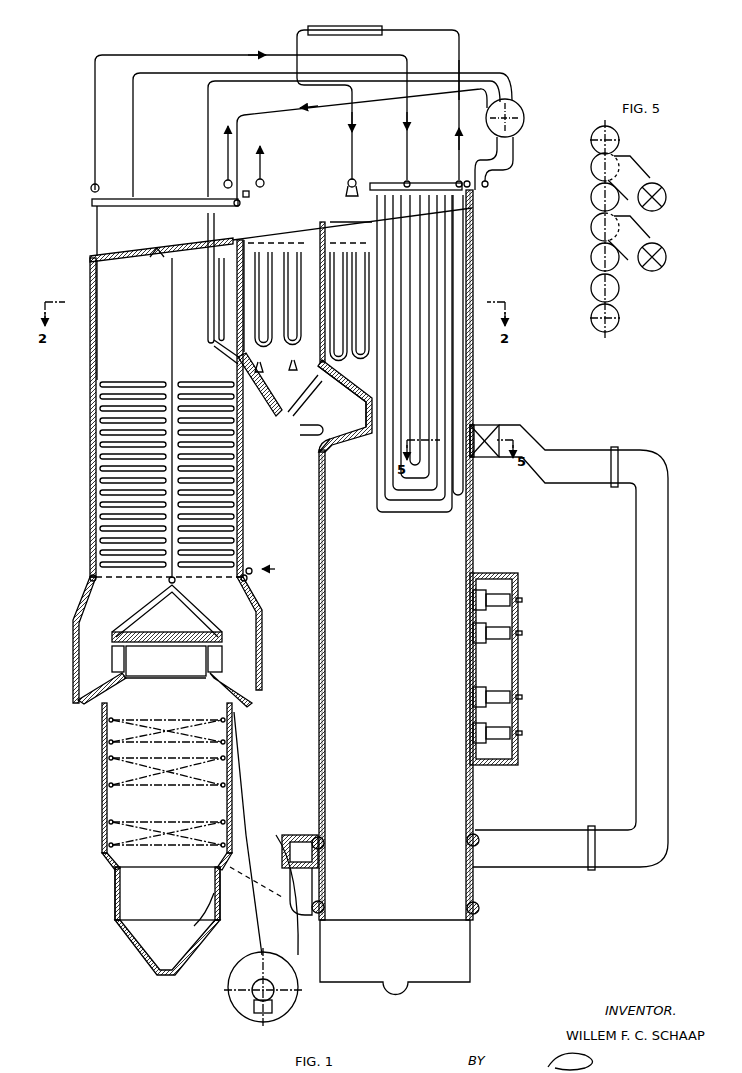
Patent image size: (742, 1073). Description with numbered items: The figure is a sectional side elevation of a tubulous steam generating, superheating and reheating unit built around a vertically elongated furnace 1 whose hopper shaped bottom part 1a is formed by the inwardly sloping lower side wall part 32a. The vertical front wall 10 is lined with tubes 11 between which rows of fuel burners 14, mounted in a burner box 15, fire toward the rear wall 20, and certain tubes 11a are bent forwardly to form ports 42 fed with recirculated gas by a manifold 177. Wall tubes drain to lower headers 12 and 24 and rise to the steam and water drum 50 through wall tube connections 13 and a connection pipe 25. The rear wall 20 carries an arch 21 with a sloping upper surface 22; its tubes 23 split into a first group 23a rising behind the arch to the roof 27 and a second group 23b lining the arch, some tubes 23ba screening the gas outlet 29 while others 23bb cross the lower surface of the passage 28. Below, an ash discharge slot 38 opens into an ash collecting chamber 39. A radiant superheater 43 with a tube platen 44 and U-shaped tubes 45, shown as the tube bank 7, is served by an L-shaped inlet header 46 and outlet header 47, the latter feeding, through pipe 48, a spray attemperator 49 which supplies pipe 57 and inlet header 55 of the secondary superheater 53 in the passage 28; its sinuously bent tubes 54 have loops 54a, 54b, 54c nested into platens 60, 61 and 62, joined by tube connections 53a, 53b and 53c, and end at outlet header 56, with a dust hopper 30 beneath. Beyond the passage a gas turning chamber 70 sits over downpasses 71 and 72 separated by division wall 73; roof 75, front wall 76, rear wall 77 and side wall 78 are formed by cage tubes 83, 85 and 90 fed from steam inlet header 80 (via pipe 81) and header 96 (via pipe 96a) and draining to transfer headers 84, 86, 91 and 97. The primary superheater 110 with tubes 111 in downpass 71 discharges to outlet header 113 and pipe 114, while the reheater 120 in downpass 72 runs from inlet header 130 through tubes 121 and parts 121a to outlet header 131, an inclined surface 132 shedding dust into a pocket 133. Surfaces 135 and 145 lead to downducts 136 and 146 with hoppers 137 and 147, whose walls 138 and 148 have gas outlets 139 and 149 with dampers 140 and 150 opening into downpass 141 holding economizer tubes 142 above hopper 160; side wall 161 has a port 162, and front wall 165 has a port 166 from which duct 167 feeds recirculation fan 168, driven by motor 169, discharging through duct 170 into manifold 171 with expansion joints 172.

In FIG. 1, the furnace 1 is at (401, 665).
In FIG. 1, the hopper shaped bottom part 1a is at (370, 806).
In FIG. 1, the tube bank 7 is at (414, 353).
In FIG. 1, the front wall 10 is at (474, 530).
In FIG. 5, the front wall 10 is at (591, 198).
In FIG. 1, the tubes 11 is at (474, 223).
In FIG. 5, the tubes 11 is at (620, 312).
In FIG. 1, the bent tubes 11a is at (482, 458).
In FIG. 5, the bent tubes 11a is at (668, 196).
In FIG. 1, the lower header 12 is at (478, 845).
In FIG. 1, the upper header connection 13 is at (468, 181).
In FIG. 1, the fuel burners 14 is at (472, 633).
In FIG. 1, the burner box 15 is at (494, 669).
In FIG. 1, the rear wall 20 is at (326, 577).
In FIG. 1, the arch 21 is at (335, 455).
In FIG. 1, the upper surface 22 is at (364, 404).
In FIG. 1, the steam generating tubes 23 is at (326, 656).
In FIG. 1, the first group of tubes 23a is at (300, 432).
In FIG. 1, the second group of tubes 23b is at (333, 443).
In FIG. 1, the screen tubes 23ba is at (370, 396).
In FIG. 1, the arch upper surface tubes 23bb is at (352, 388).
In FIG. 1, the lower header 24 is at (322, 902).
In FIG. 1, the connection pipe 25 is at (489, 184).
In FIG. 1, the roof 27 is at (352, 225).
In FIG. 1, the passage 28 is at (275, 296).
In FIG. 1, the gas outlet 29 is at (345, 292).
In FIG. 1, the dust hopper 30 is at (261, 384).
In FIG. 1, the lower side wall part 32a is at (386, 790).
In FIG. 1, the ash discharge slot 38 is at (390, 920).
In FIG. 1, the ash collecting chamber 39 is at (472, 940).
In FIG. 1, the ports 42 is at (484, 424).
In FIG. 5, the ports 42 is at (591, 167).
In FIG. 1, the radiant superheater 43 is at (460, 262).
In FIG. 1, the tube platen 44 is at (458, 287).
In FIG. 1, the U-shaped tubes 45 is at (456, 366).
In FIG. 1, the inlet header 46 is at (404, 182).
In FIG. 1, the outlet header 47 is at (447, 183).
In FIG. 1, the pipe 48 is at (461, 48).
In FIG. 1, the spray type attemperator 49 is at (368, 28).
In FIG. 1, the steam and water drum 50 is at (524, 120).
In FIG. 1, the secondary superheater 53 is at (364, 268).
In FIG. 1, the tube connection 53a is at (269, 370).
In FIG. 1, the tube connection 53b is at (300, 369).
In FIG. 1, the tube connection 53c is at (305, 395).
In FIG. 1, the sinuously bent tubes 54 is at (364, 248).
In FIG. 1, the U-shaped loop 54a is at (336, 360).
In FIG. 1, the U-shaped loop 54b is at (292, 342).
In FIG. 1, the U-shaped loop 54c is at (258, 338).
In FIG. 1, the inlet header 55 is at (349, 181).
In FIG. 1, the outlet header 56 is at (263, 181).
In FIG. 1, the pipe 57 is at (296, 47).
In FIG. 1, the tube platen 60 is at (336, 336).
In FIG. 1, the tube platen 61 is at (300, 270).
In FIG. 1, the tube platens 62 is at (260, 270).
In FIG. 1, the gas turning chamber 70 is at (158, 248).
In FIG. 1, the downpass 71 is at (133, 474).
In FIG. 1, the downpass 72 is at (260, 496).
In FIG. 1, the division wall 73 is at (170, 490).
In FIG. 1, the roof 75 is at (128, 251).
In FIG. 1, the front wall 76 is at (242, 461).
In FIG. 1, the rear wall 77 is at (90, 467).
In FIG. 1, the side wall 78 is at (100, 405).
In FIG. 1, the steam inlet header 80 is at (238, 199).
In FIG. 1, the pipe 81 is at (283, 112).
In FIG. 1, the tubes 83 is at (134, 261).
In FIG. 1, the first transfer header 84 is at (90, 575).
In FIG. 1, the tubes 85 is at (192, 252).
In FIG. 1, the second transfer header 86 is at (176, 583).
In FIG. 1, the tubes 90 is at (236, 356).
In FIG. 1, the third transfer header 91 is at (248, 580).
In FIG. 1, the steam inlet header 96 is at (168, 199).
In FIG. 1, the pipe 96a is at (206, 128).
In FIG. 1, the fourth transfer header 97 is at (146, 579).
In FIG. 1, the primary superheater 110 is at (100, 421).
In FIG. 1, the tube 111 is at (100, 378).
In FIG. 1, the outlet header 113 is at (92, 185).
In FIG. 1, the pipe 114 is at (136, 56).
In FIG. 1, the steam reheater 120 is at (242, 521).
In FIG. 1, the tube 121 is at (242, 541).
In FIG. 1, the tube part 121a is at (210, 318).
In FIG. 1, the inlet header 130 is at (275, 561).
In FIG. 1, the outlet header 131 is at (224, 183).
In FIG. 1, the inclined surface 132 is at (214, 346).
In FIG. 1, the dust pocket 133 is at (270, 396).
In FIG. 1, the sloping surface 135 is at (148, 613).
In FIG. 1, the downduct 136 is at (95, 611).
In FIG. 1, the hopper 137 is at (84, 703).
In FIG. 1, the forward wall 138 is at (112, 637).
In FIG. 1, the gas outlet 139 is at (112, 665).
In FIG. 1, the adjustable dampers 140 is at (124, 661).
In FIG. 1, the downpass 141 is at (116, 750).
In FIG. 1, the economizer tubes 142 is at (160, 782).
In FIG. 1, the sloping surface 145 is at (250, 598).
In FIG. 1, the downduct 146 is at (290, 657).
In FIG. 1, the hopper 147 is at (250, 706).
In FIG. 1, the rearward wall 148 is at (224, 638).
In FIG. 1, the gas outlet 149 is at (218, 668).
In FIG. 1, the adjustable dampers 150 is at (210, 678).
In FIG. 1, the hopper 160 is at (150, 962).
In FIG. 1, the side wall 161 is at (110, 858).
In FIG. 1, the port 162 is at (167, 893).
In FIG. 1, the front wall 165 is at (244, 806).
In FIG. 1, the port 166 is at (210, 898).
In FIG. 1, the duct 167 is at (278, 935).
In FIG. 1, the gas recirculation fan 168 is at (240, 966).
In FIG. 1, the electric driving motor 169 is at (276, 990).
In FIG. 1, the duct 170 is at (265, 882).
In FIG. 1, the manifold 171 is at (284, 838).
In FIG. 1, the expansion joints 172 is at (614, 446).
In FIG. 1, the manifold 177 is at (506, 425).